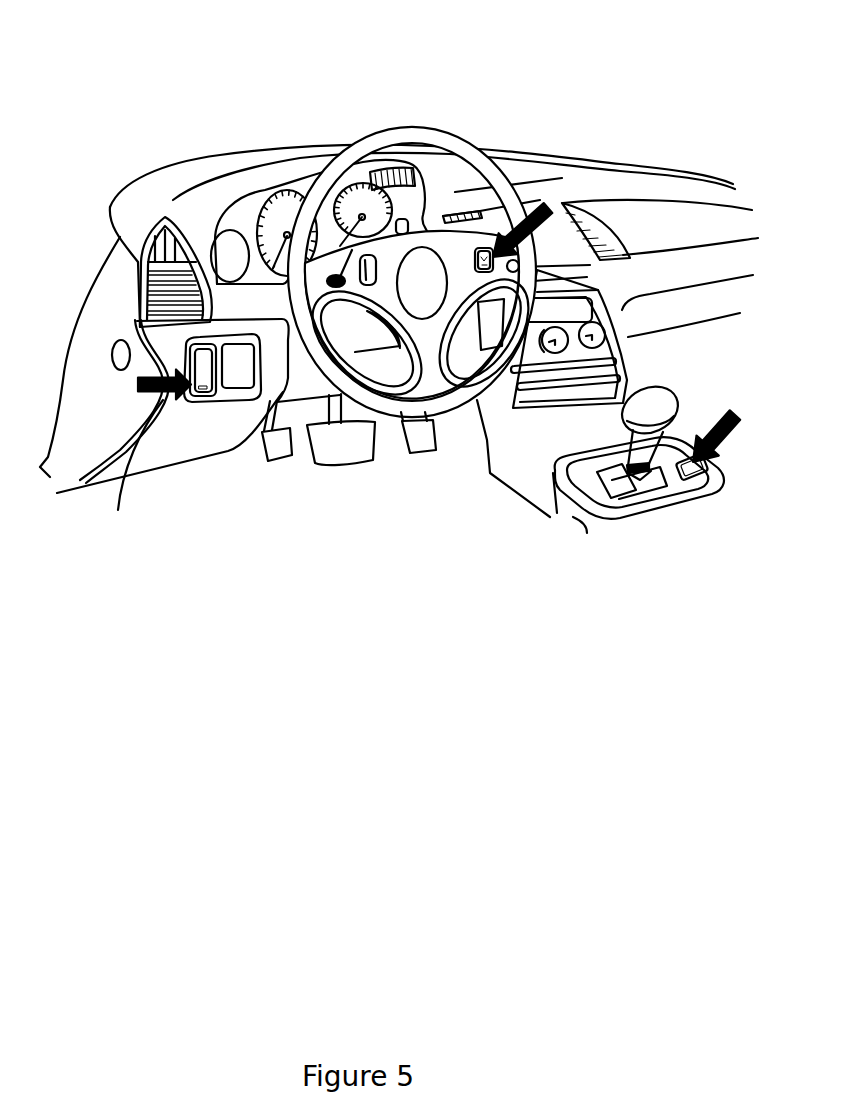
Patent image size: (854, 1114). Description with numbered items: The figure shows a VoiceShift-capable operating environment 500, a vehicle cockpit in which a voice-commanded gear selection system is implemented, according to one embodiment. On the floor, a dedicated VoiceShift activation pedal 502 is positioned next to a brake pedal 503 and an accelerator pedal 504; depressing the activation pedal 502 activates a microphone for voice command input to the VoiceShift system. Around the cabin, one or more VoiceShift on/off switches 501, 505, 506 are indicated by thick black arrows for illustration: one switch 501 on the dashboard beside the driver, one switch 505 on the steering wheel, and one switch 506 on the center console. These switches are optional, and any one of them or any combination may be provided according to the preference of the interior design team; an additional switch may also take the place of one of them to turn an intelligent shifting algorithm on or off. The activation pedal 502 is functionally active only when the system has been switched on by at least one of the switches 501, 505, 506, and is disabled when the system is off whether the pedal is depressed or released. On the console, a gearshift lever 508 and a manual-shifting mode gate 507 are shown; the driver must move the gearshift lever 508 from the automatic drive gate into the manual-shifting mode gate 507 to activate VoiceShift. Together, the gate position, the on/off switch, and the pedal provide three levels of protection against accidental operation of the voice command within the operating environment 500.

The VoiceShift-capable operating environment 500 is at (379, 988).
The VoiceShift on/off switch 501 is at (141, 400).
The dedicated VoiceShift activation pedal 502 is at (268, 463).
The brake pedal 503 is at (343, 440).
The accelerator pedal 504 is at (420, 447).
The VoiceShift on/off switch 505 is at (548, 208).
The VoiceShift on/off switch 506 is at (735, 415).
The manual-shifting mode gate 507 is at (617, 495).
The gearshift lever 508 is at (650, 405).